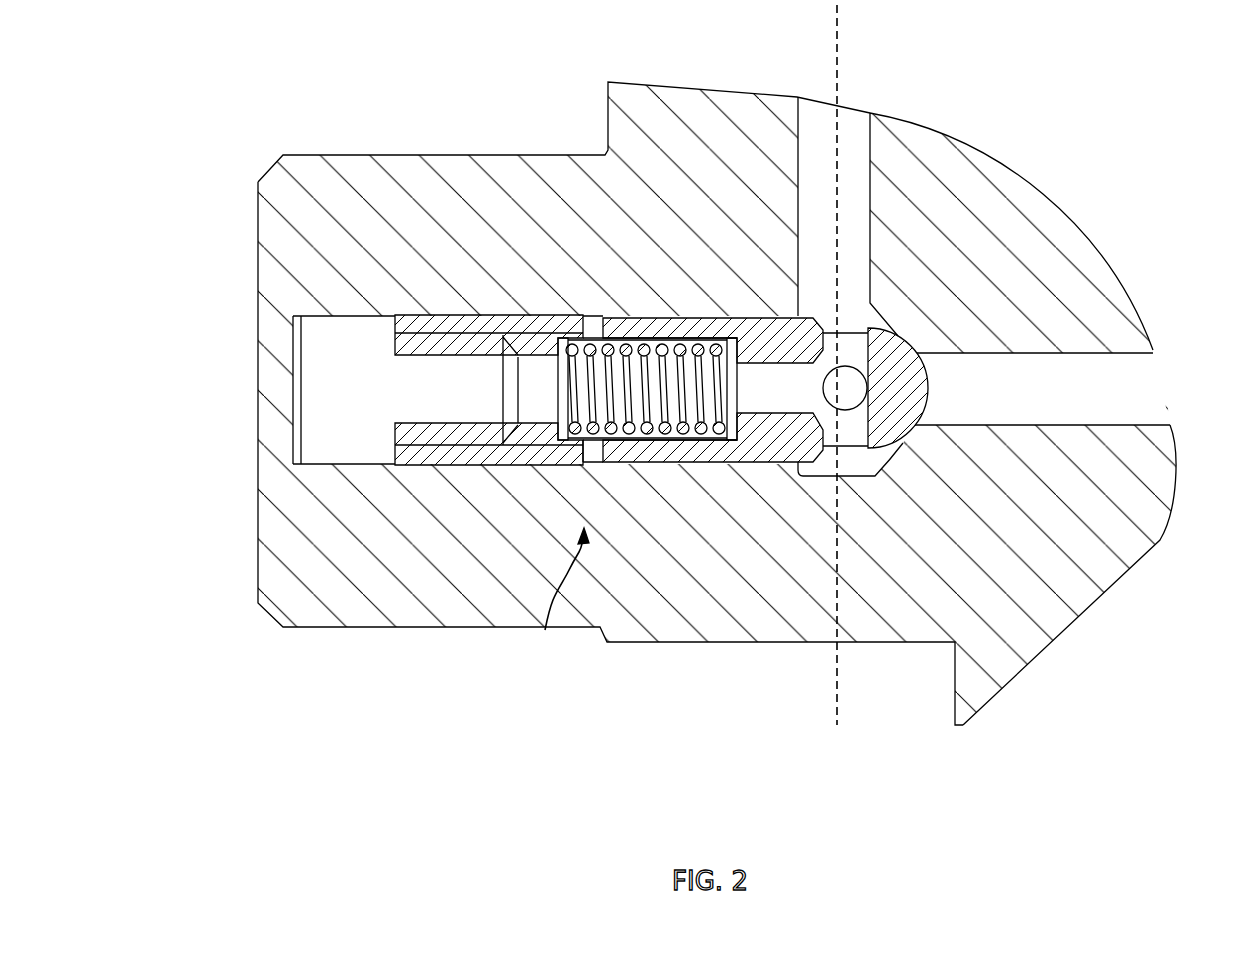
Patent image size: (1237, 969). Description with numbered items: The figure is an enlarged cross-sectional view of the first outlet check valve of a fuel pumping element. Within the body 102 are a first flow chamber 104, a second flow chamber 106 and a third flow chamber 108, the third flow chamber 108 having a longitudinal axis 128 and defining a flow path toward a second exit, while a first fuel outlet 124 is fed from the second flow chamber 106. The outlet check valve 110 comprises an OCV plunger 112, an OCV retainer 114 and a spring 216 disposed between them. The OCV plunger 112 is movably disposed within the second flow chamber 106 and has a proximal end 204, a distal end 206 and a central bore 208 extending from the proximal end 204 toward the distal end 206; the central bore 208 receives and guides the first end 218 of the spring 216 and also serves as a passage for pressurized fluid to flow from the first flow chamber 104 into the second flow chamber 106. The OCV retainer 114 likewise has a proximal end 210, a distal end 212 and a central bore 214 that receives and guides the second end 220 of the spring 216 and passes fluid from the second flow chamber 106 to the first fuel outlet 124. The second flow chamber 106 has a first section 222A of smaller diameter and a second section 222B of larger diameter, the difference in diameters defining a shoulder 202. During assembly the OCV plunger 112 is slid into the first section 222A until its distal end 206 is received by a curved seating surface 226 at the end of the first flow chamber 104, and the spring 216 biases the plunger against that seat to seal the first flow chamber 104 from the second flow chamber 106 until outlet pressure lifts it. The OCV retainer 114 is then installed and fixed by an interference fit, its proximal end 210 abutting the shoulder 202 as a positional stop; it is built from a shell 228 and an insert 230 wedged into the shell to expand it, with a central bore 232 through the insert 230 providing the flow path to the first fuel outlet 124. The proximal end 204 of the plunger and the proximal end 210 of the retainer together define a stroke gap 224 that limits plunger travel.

The body 102 is at (1050, 210).
The first flow chamber 104 is at (1140, 353).
The second flow chamber 106 is at (313, 388).
The third flow chamber 108 is at (873, 140).
The outlet check valve 110 is at (556, 598).
The OCV plunger 112 is at (653, 440).
The OCV retainer 114 is at (448, 465).
The first fuel outlet 124 is at (262, 450).
The longitudinal axis 128 is at (836, 22).
The shoulder 202 is at (583, 317).
The proximal end 204 is at (583, 316).
The distal end 206 is at (930, 387).
The central bore 208 is at (617, 320).
The proximal end 210 is at (585, 330).
The distal end 212 is at (393, 326).
The central bore 214 is at (570, 460).
The spring 216 is at (588, 462).
The first end 218 is at (722, 440).
The second end 220 is at (568, 428).
The first section 222A is at (687, 318).
The second section 222B is at (343, 465).
The stroke gap 224 is at (585, 460).
The curved seating surface 226 is at (915, 343).
The shell 228 is at (405, 457).
The insert 230 is at (404, 433).
The central bore 232 is at (405, 386).